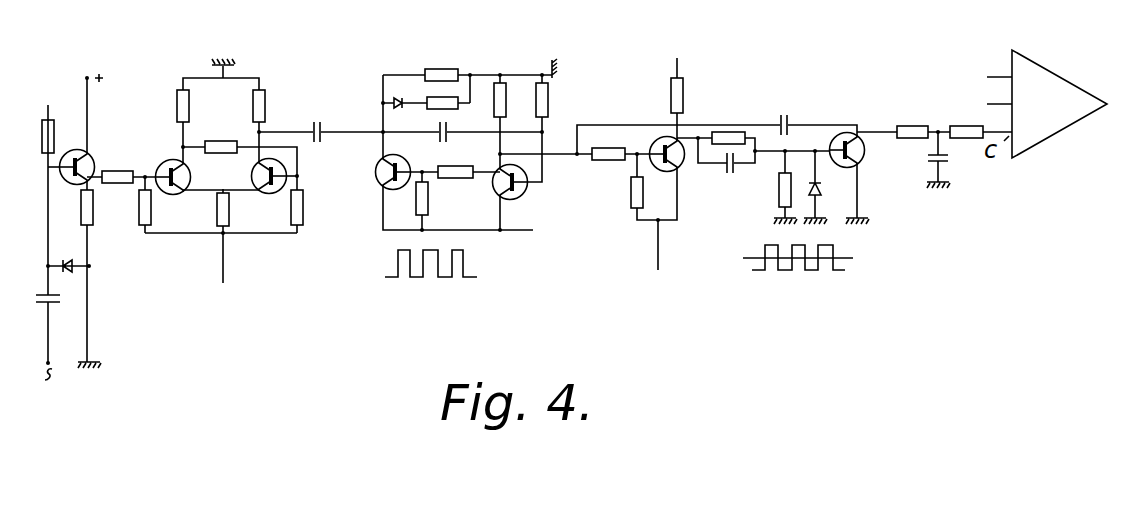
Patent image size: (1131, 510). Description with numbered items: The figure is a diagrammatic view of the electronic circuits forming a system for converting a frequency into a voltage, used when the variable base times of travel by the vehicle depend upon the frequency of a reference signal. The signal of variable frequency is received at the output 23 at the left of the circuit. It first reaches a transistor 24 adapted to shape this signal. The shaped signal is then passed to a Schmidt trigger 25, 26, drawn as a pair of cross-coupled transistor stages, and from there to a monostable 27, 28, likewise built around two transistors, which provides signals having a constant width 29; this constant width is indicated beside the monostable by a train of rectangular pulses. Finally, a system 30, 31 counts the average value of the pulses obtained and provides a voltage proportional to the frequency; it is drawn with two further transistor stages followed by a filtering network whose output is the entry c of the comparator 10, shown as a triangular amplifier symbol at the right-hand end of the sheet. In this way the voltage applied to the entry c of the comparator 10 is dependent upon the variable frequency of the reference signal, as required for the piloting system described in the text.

The comparator 10 is at (1067, 115).
The output 23 is at (49, 390).
The transistor 24 is at (89, 156).
The Schmidt trigger 25 is at (170, 161).
The Schmidt trigger 26 is at (252, 171).
The monostable 27 is at (381, 163).
The monostable 28 is at (523, 195).
The constant width 29 is at (463, 260).
The counting system 30 is at (680, 163).
The counting system 31 is at (861, 158).